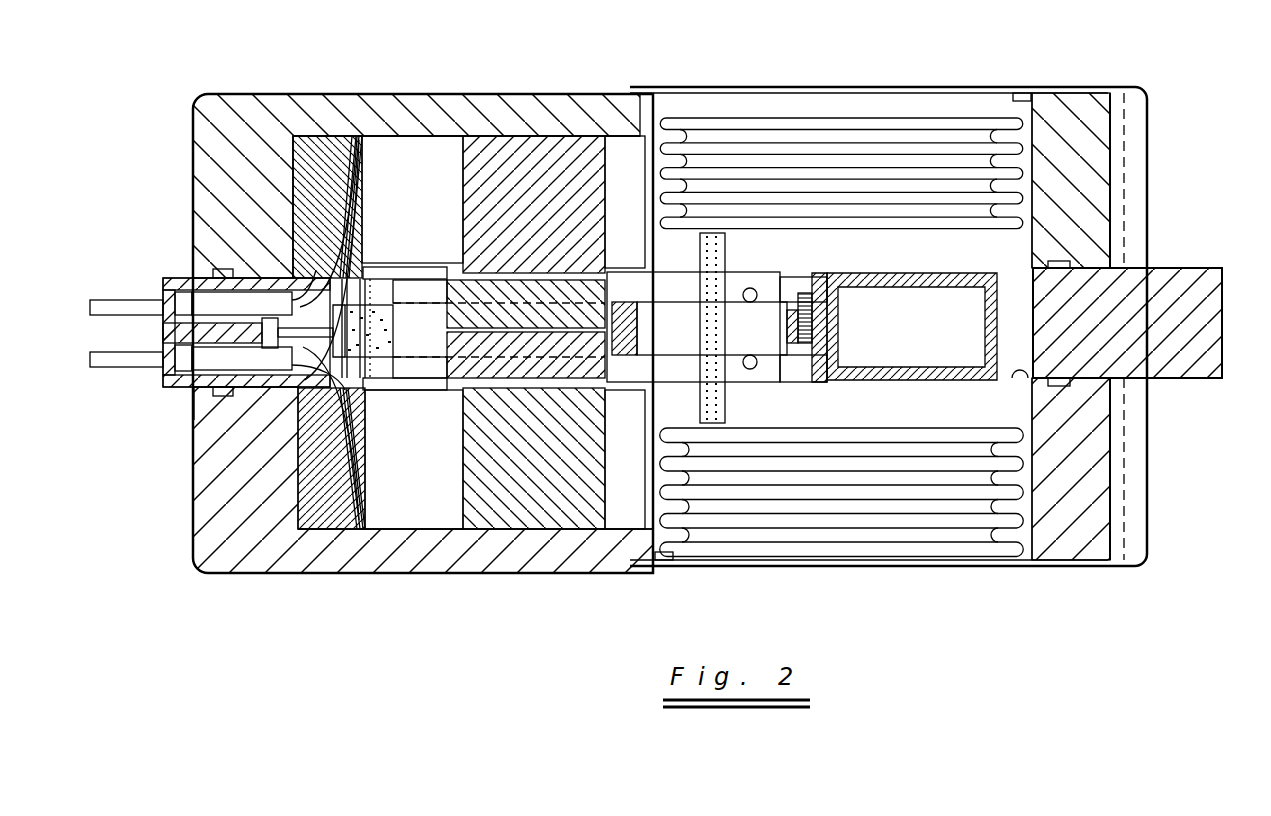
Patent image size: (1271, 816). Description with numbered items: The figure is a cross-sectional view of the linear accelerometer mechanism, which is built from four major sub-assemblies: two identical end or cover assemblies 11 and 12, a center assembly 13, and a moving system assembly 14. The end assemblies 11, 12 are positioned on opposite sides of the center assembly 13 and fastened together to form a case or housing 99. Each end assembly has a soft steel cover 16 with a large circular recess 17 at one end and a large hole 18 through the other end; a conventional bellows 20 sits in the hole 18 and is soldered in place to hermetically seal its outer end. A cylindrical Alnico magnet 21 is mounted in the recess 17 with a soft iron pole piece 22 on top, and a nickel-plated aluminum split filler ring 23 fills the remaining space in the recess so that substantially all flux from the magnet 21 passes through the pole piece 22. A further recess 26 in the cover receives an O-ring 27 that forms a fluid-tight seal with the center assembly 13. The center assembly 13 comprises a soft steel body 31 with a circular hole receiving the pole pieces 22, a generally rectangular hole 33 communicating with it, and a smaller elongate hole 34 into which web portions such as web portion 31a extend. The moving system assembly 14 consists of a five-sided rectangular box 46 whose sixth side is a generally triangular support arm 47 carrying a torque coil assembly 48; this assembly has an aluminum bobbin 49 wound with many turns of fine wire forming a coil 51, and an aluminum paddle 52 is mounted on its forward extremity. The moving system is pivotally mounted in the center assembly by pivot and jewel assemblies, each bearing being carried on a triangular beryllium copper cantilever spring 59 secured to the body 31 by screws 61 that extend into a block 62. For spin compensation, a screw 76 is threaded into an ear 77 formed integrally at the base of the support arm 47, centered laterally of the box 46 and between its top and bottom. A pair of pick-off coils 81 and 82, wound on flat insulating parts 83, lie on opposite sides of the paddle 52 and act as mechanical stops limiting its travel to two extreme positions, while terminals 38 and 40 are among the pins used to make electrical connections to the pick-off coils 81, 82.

The end or cover assembly 11 is at (190, 108).
The end or cover assembly 12 is at (190, 568).
The center assembly 13 is at (160, 404).
The moving system assembly 14 is at (915, 257).
The cover 16 is at (294, 100).
The recess 17 is at (312, 170).
The hole 18 is at (1040, 95).
The bellows 20 is at (885, 160).
The magnet 21 is at (430, 150).
The pole piece 22 is at (432, 275).
The split filler ring 23 is at (352, 175).
The recess 26 is at (198, 412).
The O-ring 27 is at (215, 270).
The body 31 is at (1172, 300).
The web portion 31a is at (185, 332).
The rectangular hole 33 is at (1021, 380).
The elongate hole 34 is at (270, 270).
The terminal 38 is at (100, 305).
The terminal 40 is at (100, 362).
The rectangular box 46 is at (895, 382).
The support arm 47 is at (714, 336).
The torque coil assembly 48 is at (388, 278).
The bobbin 49 is at (390, 303).
The coil 51 is at (395, 325).
The paddle 52 is at (300, 370).
The cantilever spring 59 is at (815, 290).
The screw 61 is at (750, 288).
The block 62 is at (787, 382).
The screw 76 is at (805, 292).
The ear 77 is at (792, 343).
The pick-off coil 81 is at (345, 235).
The pick-off coil 82 is at (248, 392).
The part 83 is at (350, 255).
The case or housing 99 is at (260, 580).